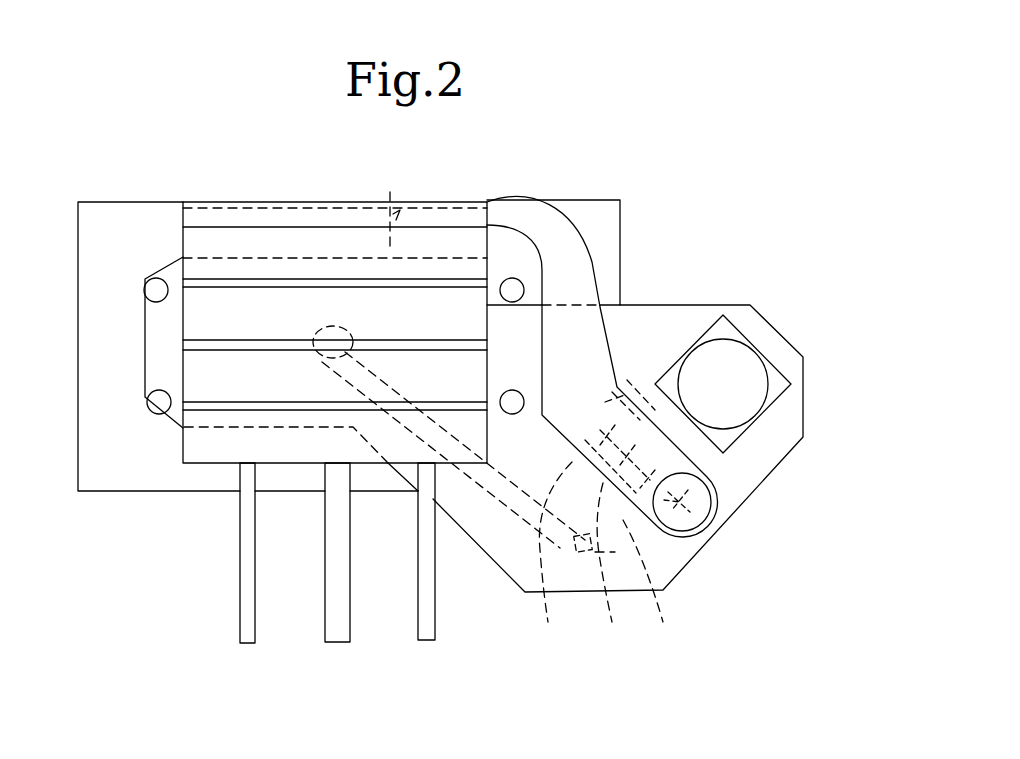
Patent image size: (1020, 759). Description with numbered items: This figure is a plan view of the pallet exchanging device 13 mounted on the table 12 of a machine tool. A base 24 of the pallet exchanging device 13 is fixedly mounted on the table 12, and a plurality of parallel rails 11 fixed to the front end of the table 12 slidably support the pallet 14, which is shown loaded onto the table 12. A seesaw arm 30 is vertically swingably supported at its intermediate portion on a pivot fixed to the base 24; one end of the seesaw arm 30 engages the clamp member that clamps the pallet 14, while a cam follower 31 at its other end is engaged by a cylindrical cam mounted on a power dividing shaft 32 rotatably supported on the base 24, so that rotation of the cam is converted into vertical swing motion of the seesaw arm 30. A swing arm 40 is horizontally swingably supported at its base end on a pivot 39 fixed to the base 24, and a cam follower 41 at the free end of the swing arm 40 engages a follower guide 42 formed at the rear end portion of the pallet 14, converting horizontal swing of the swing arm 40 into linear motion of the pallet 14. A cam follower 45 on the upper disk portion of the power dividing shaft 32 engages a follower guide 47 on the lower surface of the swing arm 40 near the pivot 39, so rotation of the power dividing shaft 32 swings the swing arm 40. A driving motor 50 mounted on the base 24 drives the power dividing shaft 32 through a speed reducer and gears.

The parallel rails 11 is at (422, 617).
The table 12 is at (137, 470).
The pallet exchanging device 13 is at (143, 165).
The pallet 14 is at (273, 307).
The base 24 is at (755, 468).
The seesaw arm 30 is at (449, 488).
The cam follower 31 is at (604, 567).
The power dividing shaft 32 is at (641, 585).
The pivot 39 is at (690, 505).
The swing arm 40 is at (577, 275).
The cam follower 41 is at (393, 214).
The follower guide 42 is at (320, 220).
The cam follower 45 is at (688, 560).
The follower guide 47 is at (635, 392).
The driving motor 50 is at (732, 370).